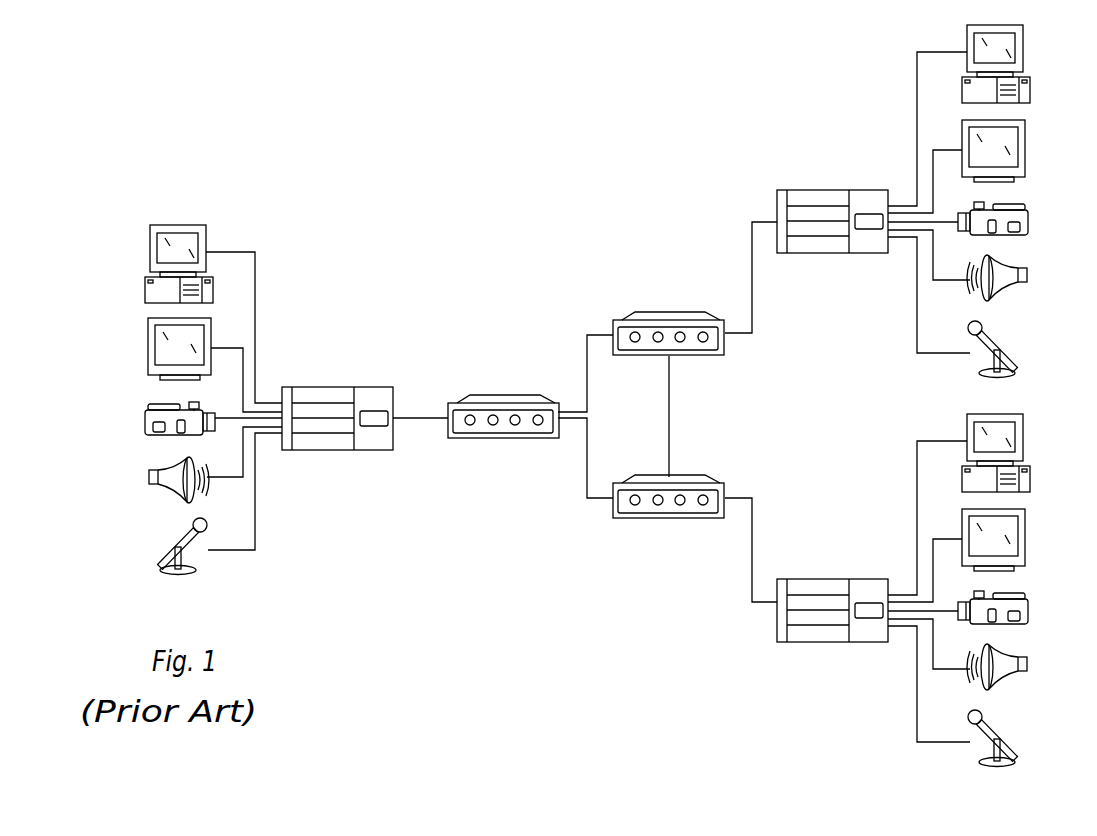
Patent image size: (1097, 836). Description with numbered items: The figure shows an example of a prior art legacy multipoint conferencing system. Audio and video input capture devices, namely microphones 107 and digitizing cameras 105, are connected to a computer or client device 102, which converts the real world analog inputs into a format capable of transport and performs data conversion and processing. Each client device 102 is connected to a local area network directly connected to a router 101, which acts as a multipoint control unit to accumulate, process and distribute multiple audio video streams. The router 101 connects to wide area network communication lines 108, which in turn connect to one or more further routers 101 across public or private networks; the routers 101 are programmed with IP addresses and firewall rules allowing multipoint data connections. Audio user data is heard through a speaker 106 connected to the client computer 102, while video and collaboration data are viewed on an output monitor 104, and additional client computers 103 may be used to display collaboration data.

The router 101 is at (488, 395).
The client device 102 is at (324, 386).
The additional client computer 103 is at (150, 246).
The output monitor 104 is at (148, 340).
The digitizing camera 105 is at (145, 405).
The speaker 106 is at (149, 476).
The microphone 107 is at (168, 552).
The communication lines 108 is at (586, 362).